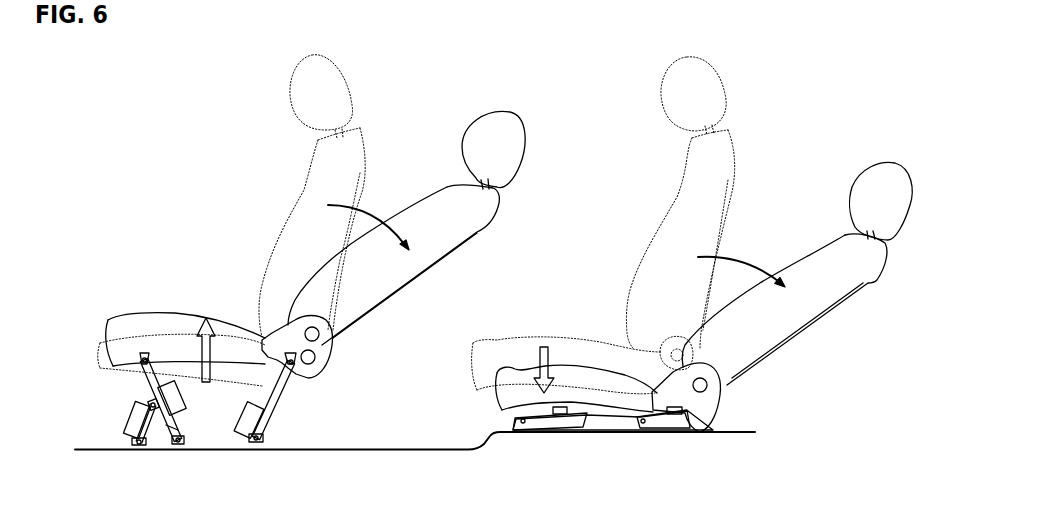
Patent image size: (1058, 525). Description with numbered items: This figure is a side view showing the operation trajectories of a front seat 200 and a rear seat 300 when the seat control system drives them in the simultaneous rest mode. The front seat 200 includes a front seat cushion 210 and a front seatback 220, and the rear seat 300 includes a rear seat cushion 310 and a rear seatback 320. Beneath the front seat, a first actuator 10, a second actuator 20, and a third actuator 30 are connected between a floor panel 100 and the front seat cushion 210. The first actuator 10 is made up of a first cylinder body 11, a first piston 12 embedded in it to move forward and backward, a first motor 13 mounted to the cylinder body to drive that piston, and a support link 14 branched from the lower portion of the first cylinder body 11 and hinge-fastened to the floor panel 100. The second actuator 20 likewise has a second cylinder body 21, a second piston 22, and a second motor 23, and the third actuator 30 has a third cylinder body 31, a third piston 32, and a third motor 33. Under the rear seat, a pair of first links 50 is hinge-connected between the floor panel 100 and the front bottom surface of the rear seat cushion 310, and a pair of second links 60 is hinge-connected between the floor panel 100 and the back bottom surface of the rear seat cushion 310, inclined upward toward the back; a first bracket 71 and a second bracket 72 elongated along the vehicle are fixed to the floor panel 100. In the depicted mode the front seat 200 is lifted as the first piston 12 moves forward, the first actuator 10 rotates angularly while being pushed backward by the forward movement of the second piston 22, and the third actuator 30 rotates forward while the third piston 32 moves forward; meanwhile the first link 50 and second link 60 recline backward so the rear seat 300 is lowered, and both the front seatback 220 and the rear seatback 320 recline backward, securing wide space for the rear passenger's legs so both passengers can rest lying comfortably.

The first actuator 10 is at (243, 476).
The first cylinder body 11 is at (174, 444).
The first piston 12 is at (184, 405).
The first motor 13 is at (174, 427).
The support link 14 is at (170, 437).
The second actuator 20 is at (73, 385).
The second cylinder body 21 is at (137, 441).
The second piston 22 is at (151, 403).
The second motor 23 is at (134, 418).
The third actuator 30 is at (345, 466).
The third cylinder body 31 is at (263, 417).
The third piston 32 is at (286, 367).
The third motor 33 is at (258, 440).
The first links 50 is at (547, 407).
The second links 60 is at (684, 409).
The first bracket 71 is at (613, 449).
The second bracket 72 is at (597, 426).
The floor panel 100 is at (410, 451).
The front seat 200 is at (200, 203).
The front seat cushion 210 is at (168, 327).
The front seatback 220 is at (310, 270).
The rear seat 300 is at (600, 247).
The rear seat cushion 310 is at (567, 372).
The rear seatback 320 is at (724, 312).